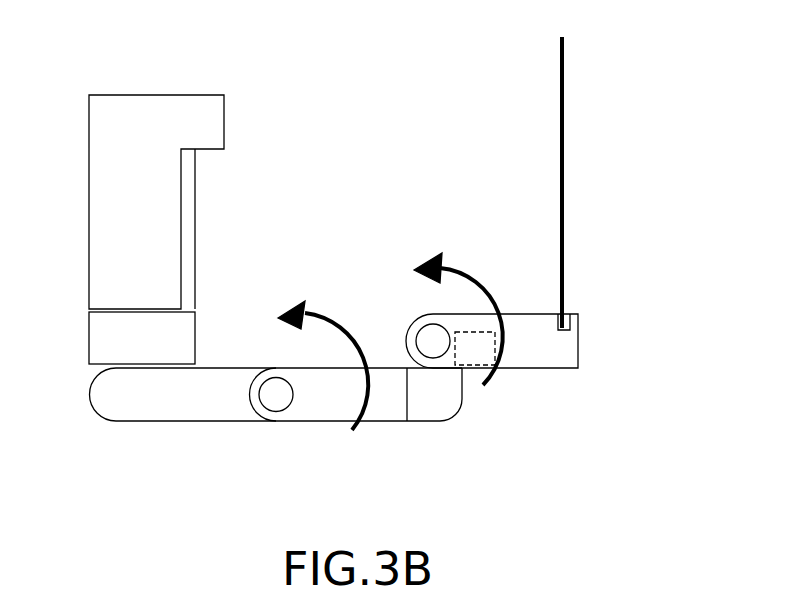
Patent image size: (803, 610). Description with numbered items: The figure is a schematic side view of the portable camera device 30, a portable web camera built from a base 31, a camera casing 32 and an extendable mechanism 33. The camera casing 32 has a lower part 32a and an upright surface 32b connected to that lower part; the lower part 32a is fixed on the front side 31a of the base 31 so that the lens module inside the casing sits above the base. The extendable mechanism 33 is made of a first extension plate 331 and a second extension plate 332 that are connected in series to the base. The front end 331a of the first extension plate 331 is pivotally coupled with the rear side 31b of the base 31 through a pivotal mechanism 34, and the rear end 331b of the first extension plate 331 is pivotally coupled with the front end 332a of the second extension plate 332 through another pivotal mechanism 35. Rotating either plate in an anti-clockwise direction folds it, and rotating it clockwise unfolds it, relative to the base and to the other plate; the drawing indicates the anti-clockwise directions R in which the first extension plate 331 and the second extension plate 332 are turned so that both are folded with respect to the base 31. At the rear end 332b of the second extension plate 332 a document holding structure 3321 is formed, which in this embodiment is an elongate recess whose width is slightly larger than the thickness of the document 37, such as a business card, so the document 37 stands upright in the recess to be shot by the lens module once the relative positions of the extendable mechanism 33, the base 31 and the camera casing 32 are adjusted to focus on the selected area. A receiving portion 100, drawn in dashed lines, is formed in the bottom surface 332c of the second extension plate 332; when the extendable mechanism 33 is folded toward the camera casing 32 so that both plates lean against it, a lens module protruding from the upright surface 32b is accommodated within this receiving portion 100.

The portable camera device 30 is at (491, 42).
The base 31 is at (253, 422).
The front side of the base 31a is at (110, 405).
The rear side of the base 31b is at (238, 407).
The camera casing 32 is at (158, 229).
The lower part of the camera casing 32a is at (173, 332).
The upright surface of the camera casing 32b is at (195, 215).
The extendable mechanism 33 is at (461, 386).
The first extension plate 331 is at (389, 408).
The front end of the first extension plate 331a is at (285, 413).
The rear end of the first extension plate 331b is at (450, 380).
The second extension plate 332 is at (513, 339).
The front end of the second extension plate 332a is at (522, 320).
The rear end of the second extension plate 332b is at (580, 328).
The bottom surface of the second extension plate 332c is at (571, 408).
The document holding structure 3321 is at (567, 313).
The pivotal mechanism 34 is at (270, 387).
The pivotal mechanism 35 is at (433, 333).
The document 37 is at (562, 137).
The receiving portion 100 is at (467, 330).
The anti-clockwise direction R is at (312, 313).